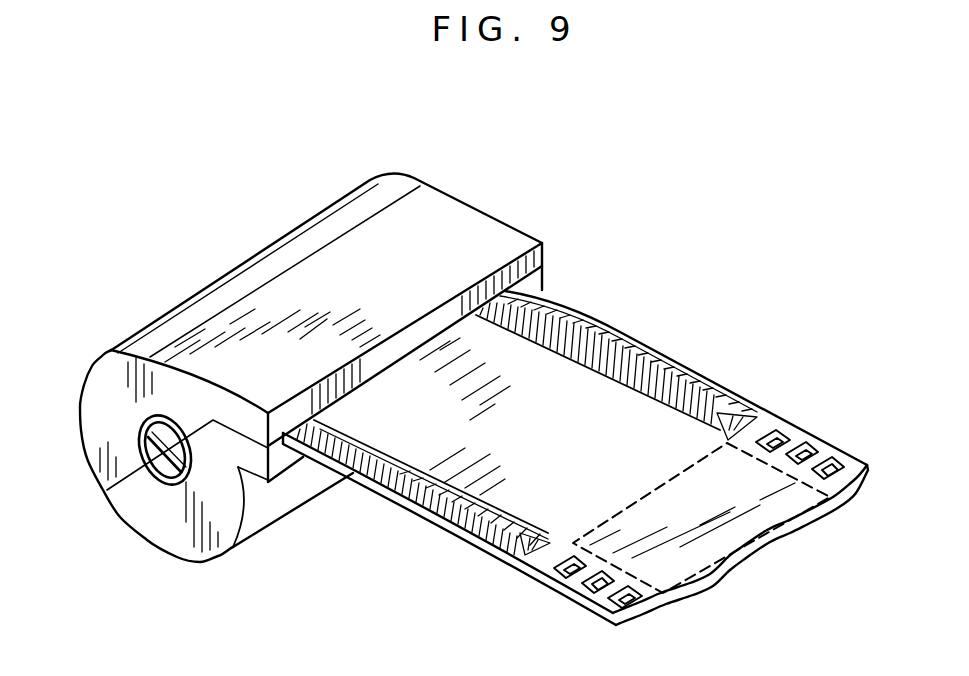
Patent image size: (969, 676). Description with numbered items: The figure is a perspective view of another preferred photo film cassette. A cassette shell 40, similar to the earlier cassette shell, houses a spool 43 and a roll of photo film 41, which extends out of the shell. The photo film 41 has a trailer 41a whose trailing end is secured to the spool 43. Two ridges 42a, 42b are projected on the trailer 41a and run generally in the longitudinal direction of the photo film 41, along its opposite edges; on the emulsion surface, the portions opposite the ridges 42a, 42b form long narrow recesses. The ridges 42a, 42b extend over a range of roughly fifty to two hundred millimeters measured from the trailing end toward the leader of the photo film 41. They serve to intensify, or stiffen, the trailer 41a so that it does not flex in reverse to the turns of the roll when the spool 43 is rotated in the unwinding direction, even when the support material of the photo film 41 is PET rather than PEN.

The cassette shell 40 is at (467, 203).
The photo film 41 is at (698, 376).
The trailer 41a is at (463, 400).
The ridge 42a is at (407, 483).
The ridge 42b is at (578, 320).
The spool 43 is at (180, 492).